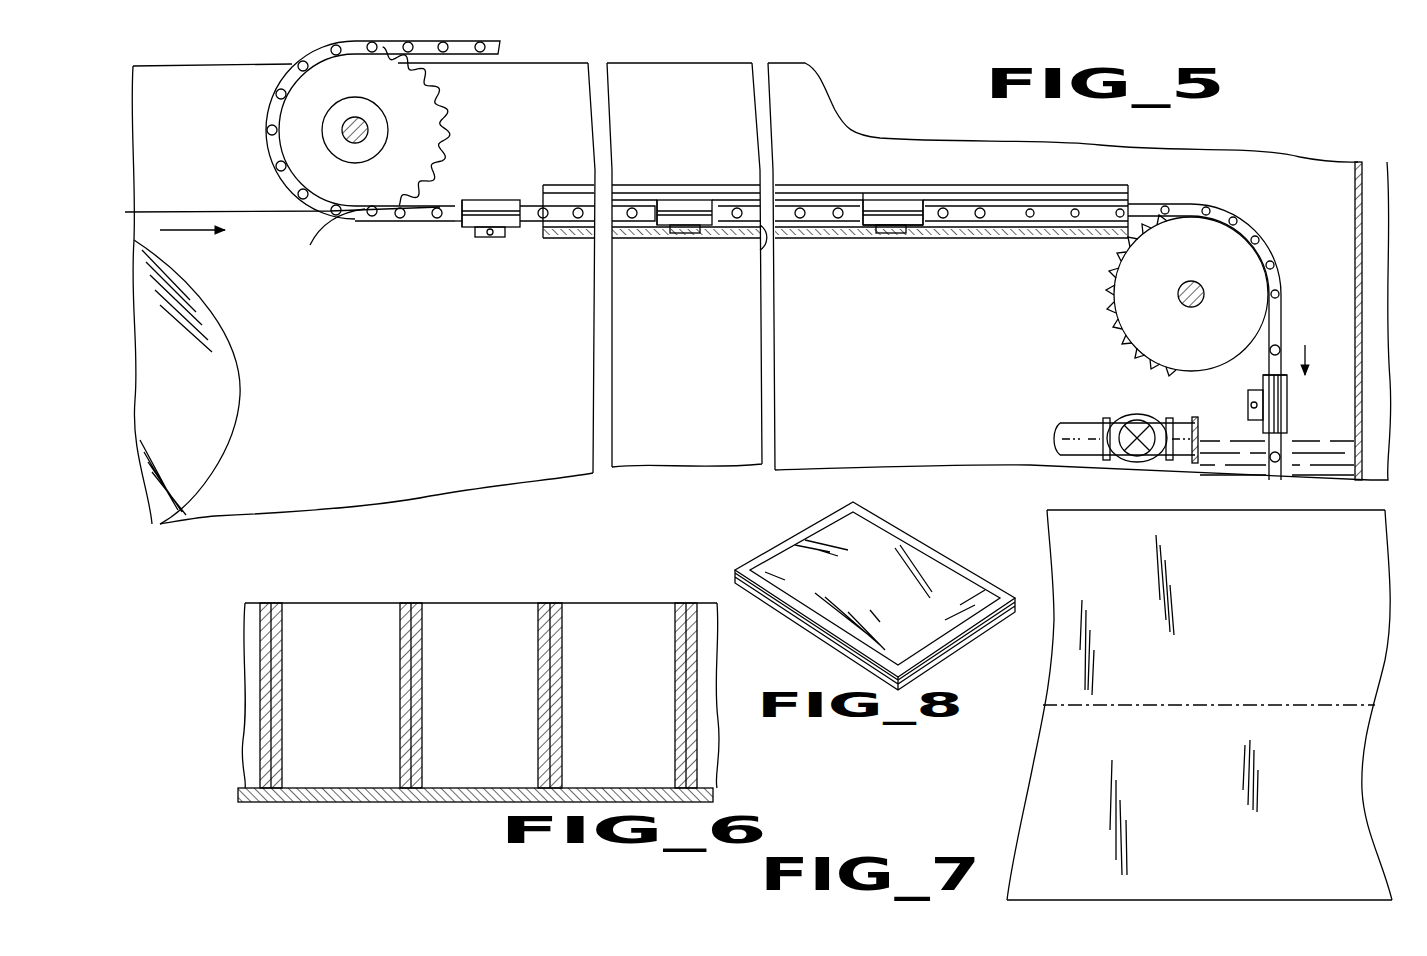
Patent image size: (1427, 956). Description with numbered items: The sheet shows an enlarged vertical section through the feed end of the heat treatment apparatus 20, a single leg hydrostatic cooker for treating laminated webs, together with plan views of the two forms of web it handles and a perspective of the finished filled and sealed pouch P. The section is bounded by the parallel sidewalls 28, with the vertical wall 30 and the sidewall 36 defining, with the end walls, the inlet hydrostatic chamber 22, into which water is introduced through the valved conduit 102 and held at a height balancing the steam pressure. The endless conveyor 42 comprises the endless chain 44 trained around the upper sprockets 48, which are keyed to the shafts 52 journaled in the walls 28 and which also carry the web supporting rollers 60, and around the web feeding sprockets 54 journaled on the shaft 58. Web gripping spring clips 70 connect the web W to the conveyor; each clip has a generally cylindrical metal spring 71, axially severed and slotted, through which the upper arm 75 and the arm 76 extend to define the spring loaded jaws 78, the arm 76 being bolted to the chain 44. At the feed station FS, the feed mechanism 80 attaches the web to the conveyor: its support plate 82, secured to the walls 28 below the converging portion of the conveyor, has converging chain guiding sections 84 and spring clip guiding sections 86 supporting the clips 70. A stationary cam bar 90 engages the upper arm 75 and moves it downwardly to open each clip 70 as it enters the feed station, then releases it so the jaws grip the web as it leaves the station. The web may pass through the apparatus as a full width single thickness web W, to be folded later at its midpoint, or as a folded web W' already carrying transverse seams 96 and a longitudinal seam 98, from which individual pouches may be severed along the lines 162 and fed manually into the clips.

In FIG. 5, the heat treatment apparatus 20 is at (1185, 145).
In FIG. 5, the inlet hydrostatic chamber 22 is at (1330, 464).
In FIG. 5, the sidewalls 28 is at (352, 408).
In FIG. 5, the vertical wall 30 is at (1374, 150).
In FIG. 5, the sidewall 36 is at (1195, 458).
In FIG. 5, the endless conveyor 42 is at (262, 118).
In FIG. 5, the endless chain 44 is at (500, 46).
In FIG. 5, the upper sprockets 48 is at (1112, 340).
In FIG. 5, the shafts 52 is at (1202, 289).
In FIG. 5, the web feeding sprockets 54 is at (445, 112).
In FIG. 5, the shaft 58 is at (356, 117).
In FIG. 5, the web supporting rollers 60 is at (1120, 320).
In FIG. 5, the web gripping spring clips 70 is at (455, 226).
In FIG. 5, the cylindrical metal spring 71 is at (470, 200).
In FIG. 5, the upper arm 75 is at (505, 200).
In FIG. 5, the arm 76 is at (472, 234).
In FIG. 5, the spring loaded jaws 78 is at (665, 196).
In FIG. 5, the feed mechanism 80 is at (835, 185).
In FIG. 5, the support plate 82 is at (790, 239).
In FIG. 5, the chain guiding sections 84 is at (760, 246).
In FIG. 5, the spring clip guiding sections 86 is at (887, 228).
In FIG. 5, the stationary cam bar 90 is at (585, 192).
In FIG. 6, the transverse seams 96 is at (410, 694).
In FIG. 6, the longitudinal seam 98 is at (240, 792).
In FIG. 5, the valved conduit 102 is at (1076, 425).
In FIG. 6, the severing lines 162 is at (412, 631).
In FIG. 5, the web W is at (722, 274).
In FIG. 7, the web W is at (1199, 705).
In FIG. 6, the folded web W' is at (441, 695).
In FIG. 5, the unwind roll UR is at (222, 345).
In FIG. 5, the feed station FS is at (570, 134).
In FIG. 8, the pouch P is at (910, 548).